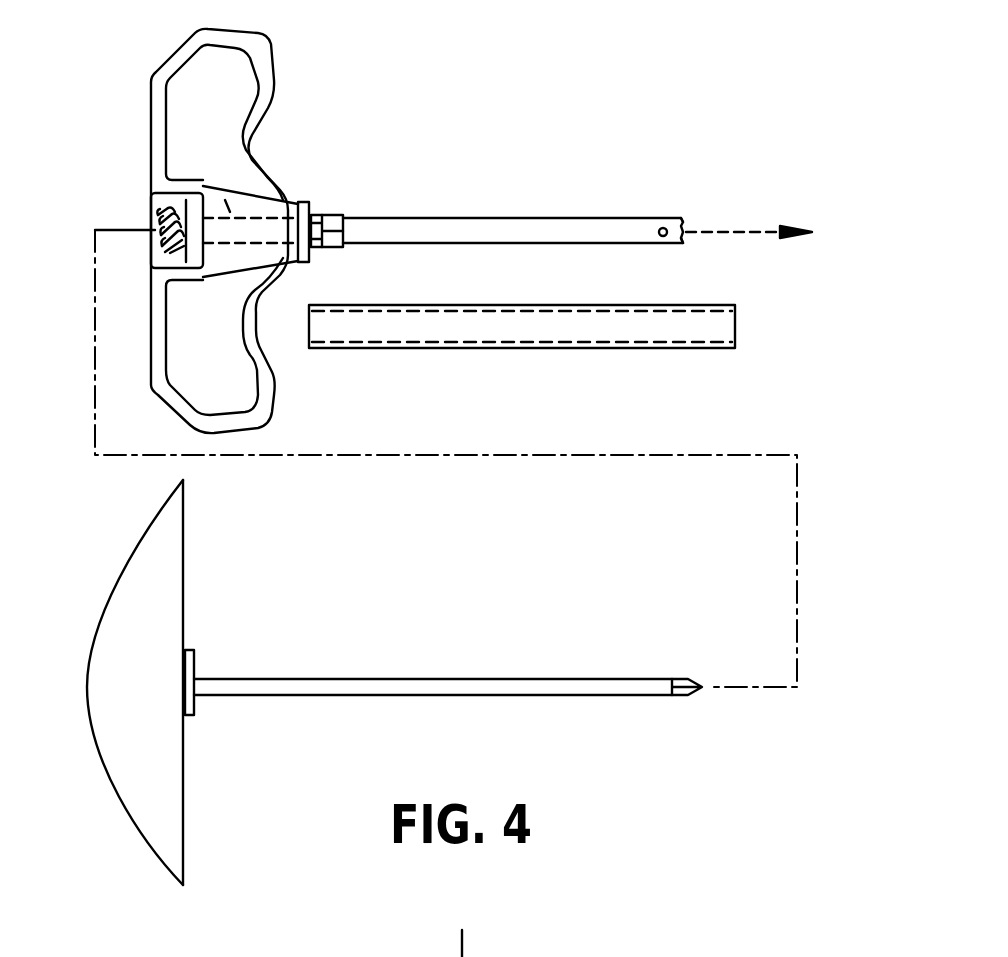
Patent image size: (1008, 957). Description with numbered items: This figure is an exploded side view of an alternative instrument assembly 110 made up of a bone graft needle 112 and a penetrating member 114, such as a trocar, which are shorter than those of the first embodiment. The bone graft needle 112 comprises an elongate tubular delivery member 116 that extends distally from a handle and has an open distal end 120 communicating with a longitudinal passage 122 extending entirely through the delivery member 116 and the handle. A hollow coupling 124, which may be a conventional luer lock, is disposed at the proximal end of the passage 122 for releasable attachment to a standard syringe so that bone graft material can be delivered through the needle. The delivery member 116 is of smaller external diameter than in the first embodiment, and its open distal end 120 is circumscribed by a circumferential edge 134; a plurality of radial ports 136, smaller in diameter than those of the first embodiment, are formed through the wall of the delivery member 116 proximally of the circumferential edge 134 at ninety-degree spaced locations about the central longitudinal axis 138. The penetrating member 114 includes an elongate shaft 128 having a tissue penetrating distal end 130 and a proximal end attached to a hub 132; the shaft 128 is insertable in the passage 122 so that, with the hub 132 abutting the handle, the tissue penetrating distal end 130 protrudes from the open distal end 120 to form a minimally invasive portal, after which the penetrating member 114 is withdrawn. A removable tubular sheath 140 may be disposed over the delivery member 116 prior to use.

The instrument assembly 110 is at (407, 150).
The bone graft needle 112 is at (128, 136).
The penetrating member 114 is at (515, 668).
The delivery member 116 is at (397, 207).
The open distal end 120 is at (688, 260).
The longitudinal passage 122 is at (218, 187).
The hollow coupling 124 is at (143, 244).
The elongate shaft 128 is at (402, 682).
The tissue penetrating distal end 130 is at (694, 696).
The hub 132 is at (89, 612).
The circumferential edge 134 is at (693, 225).
The radial ports 136 is at (647, 163).
The central longitudinal axis 138 is at (763, 227).
The tubular sheath 140 is at (704, 363).